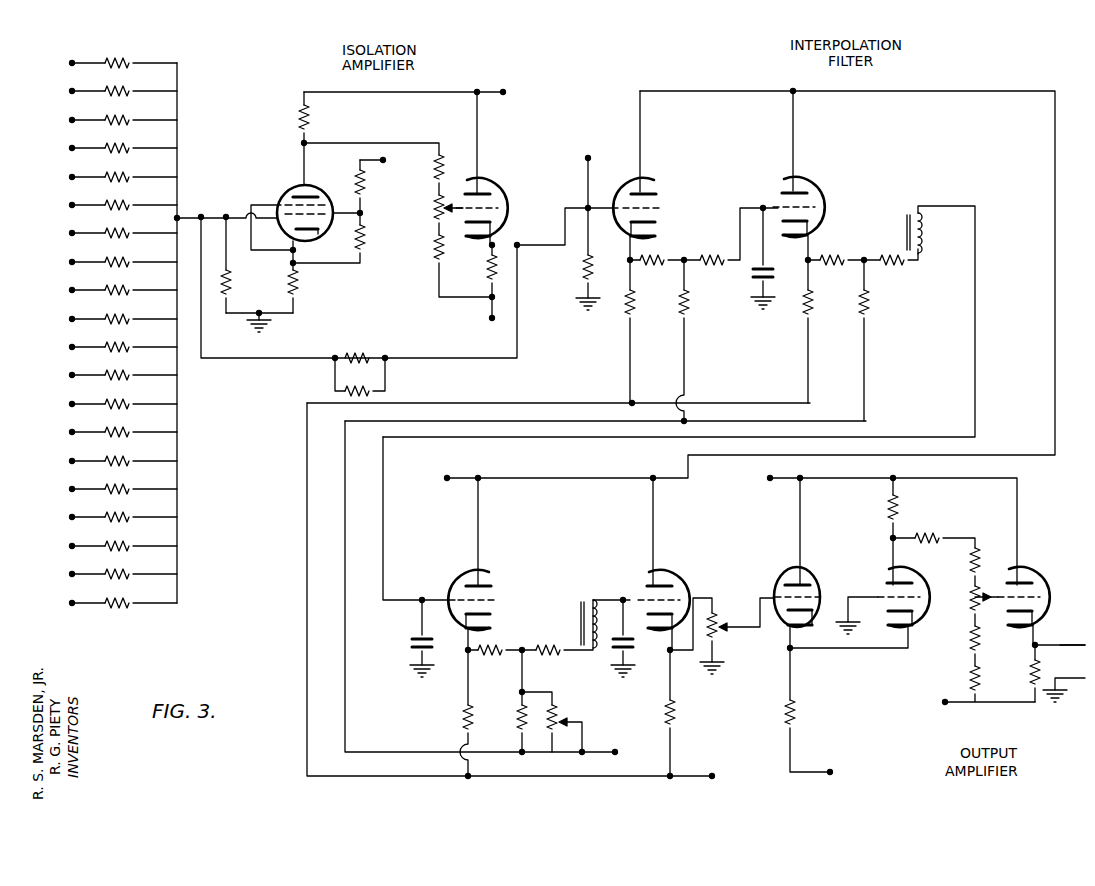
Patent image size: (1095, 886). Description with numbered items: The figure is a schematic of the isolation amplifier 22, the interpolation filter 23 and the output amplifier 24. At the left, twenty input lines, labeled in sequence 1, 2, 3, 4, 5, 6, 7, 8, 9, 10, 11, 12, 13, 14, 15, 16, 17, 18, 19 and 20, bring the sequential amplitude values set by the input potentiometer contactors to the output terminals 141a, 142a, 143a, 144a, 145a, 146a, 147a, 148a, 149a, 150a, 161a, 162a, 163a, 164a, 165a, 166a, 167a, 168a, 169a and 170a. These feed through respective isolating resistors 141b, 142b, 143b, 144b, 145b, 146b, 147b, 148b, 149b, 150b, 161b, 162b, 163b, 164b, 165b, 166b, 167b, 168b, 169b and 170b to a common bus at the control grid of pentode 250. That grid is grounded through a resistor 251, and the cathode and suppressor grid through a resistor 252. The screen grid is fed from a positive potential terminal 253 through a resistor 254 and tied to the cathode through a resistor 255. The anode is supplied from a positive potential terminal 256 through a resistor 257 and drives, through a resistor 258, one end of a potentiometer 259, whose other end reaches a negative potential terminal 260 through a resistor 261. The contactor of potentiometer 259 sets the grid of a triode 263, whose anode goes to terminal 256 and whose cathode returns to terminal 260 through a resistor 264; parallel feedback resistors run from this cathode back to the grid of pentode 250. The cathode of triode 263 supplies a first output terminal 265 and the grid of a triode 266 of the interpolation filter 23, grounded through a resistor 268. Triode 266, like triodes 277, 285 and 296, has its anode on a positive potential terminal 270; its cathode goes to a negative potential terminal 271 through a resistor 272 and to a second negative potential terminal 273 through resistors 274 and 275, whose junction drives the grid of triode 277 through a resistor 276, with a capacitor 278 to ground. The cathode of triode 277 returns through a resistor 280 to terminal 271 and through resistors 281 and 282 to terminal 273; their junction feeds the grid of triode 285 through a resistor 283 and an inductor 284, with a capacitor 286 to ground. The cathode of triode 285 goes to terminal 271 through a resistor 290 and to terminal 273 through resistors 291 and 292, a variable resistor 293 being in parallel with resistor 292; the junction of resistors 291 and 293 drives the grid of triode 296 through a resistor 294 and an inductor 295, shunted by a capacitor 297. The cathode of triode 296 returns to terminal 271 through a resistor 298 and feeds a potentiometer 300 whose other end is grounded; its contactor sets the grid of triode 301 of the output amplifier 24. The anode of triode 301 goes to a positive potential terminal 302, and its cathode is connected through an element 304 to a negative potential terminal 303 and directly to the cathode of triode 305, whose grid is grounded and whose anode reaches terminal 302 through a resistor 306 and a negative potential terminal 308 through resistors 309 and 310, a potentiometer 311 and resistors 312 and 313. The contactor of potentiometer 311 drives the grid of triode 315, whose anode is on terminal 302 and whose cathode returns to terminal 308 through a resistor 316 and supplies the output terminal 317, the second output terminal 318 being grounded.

The switch contact 1 is at (88, 56).
The switch contact 2 is at (88, 84).
The switch contact 3 is at (88, 113).
The switch contact 4 is at (88, 141).
The switch contact 5 is at (88, 170).
The switch contact 6 is at (88, 198).
The switch contact 7 is at (88, 226).
The switch contact 8 is at (88, 255).
The switch contact 9 is at (88, 283).
The switch contact 10 is at (88, 312).
The switch contact 11 is at (88, 340).
The switch contact 12 is at (88, 368).
The switch contact 13 is at (88, 397).
The switch contact 14 is at (88, 425).
The switch contact 15 is at (88, 454).
The switch contact 16 is at (88, 482).
The switch contact 17 is at (88, 510).
The switch contact 18 is at (88, 539).
The switch contact 19 is at (88, 567).
The switch contact 20 is at (88, 596).
The output terminal 141a is at (67, 65).
The output terminal 142a is at (67, 93).
The output terminal 143a is at (67, 122).
The output terminal 144a is at (67, 150).
The output terminal 145a is at (67, 179).
The output terminal 146a is at (67, 207).
The output terminal 147a is at (67, 235).
The output terminal 148a is at (67, 264).
The output terminal 149a is at (67, 292).
The output terminal 150a is at (67, 321).
The output terminal 161a is at (67, 349).
The output terminal 162a is at (67, 377).
The output terminal 163a is at (67, 406).
The output terminal 164a is at (67, 434).
The output terminal 165a is at (67, 463).
The output terminal 166a is at (67, 491).
The output terminal 167a is at (67, 519).
The output terminal 168a is at (67, 548).
The output terminal 169a is at (67, 576).
The output terminal 170a is at (67, 605).
The isolating resistor 141b is at (122, 62).
The isolating resistor 142b is at (122, 90).
The isolating resistor 143b is at (122, 119).
The isolating resistor 144b is at (122, 147).
The isolating resistor 145b is at (122, 176).
The isolating resistor 146b is at (122, 204).
The isolating resistor 147b is at (122, 227).
The isolating resistor 148b is at (122, 261).
The isolating resistor 149b is at (122, 289).
The isolating resistor 150b is at (122, 318).
The isolating resistor 161b is at (122, 346).
The isolating resistor 162b is at (122, 374).
The isolating resistor 163b is at (122, 403).
The isolating resistor 164b is at (122, 431).
The isolating resistor 165b is at (122, 460).
The isolating resistor 166b is at (122, 488).
The isolating resistor 167b is at (122, 516).
The isolating resistor 168b is at (122, 545).
The isolating resistor 169b is at (122, 573).
The isolating resistor 170b is at (122, 602).
The isolation amplifier 22 is at (264, 126).
The interpolation filter 23 is at (726, 122).
The output amplifier 24 is at (858, 504).
The pentode 250 is at (286, 190).
The resistor 251 is at (228, 290).
The resistor 252 is at (295, 290).
The positive potential terminal 253 is at (389, 159).
The resistor 254 is at (355, 174).
The resistor 255 is at (367, 249).
The positive potential terminal 256 is at (504, 92).
The resistor 257 is at (310, 123).
The resistor 258 is at (436, 175).
The potentiometer 259 is at (434, 210).
The negative potential terminal 260 is at (488, 318).
The resistor 261 is at (436, 253).
The triode 263 is at (493, 188).
The resistor 264 is at (490, 279).
The first output terminal 265 is at (588, 157).
The triode 266 is at (638, 180).
The resistor 268 is at (586, 274).
The positive potential terminal 270 is at (444, 482).
The negative potential terminal 271 is at (714, 772).
The resistor 272 is at (638, 309).
The second negative potential terminal 273 is at (618, 748).
The resistor 274 is at (651, 269).
The resistor 275 is at (690, 309).
The resistor 276 is at (713, 248).
The triode 277 is at (816, 185).
The capacitor 278 is at (752, 269).
The resistor 280 is at (821, 310).
The resistor 281 is at (830, 255).
The resistor 282 is at (872, 315).
The resistor 283 is at (896, 270).
The inductor 284 is at (924, 227).
The triode 285 is at (458, 564).
The capacitor 286 is at (411, 638).
The resistor 290 is at (458, 724).
The resistor 291 is at (502, 647).
The resistor 292 is at (519, 730).
The variable resistor 293 is at (564, 715).
The resistor 294 is at (568, 654).
The inductor 295 is at (602, 593).
The triode 296 is at (678, 562).
The capacitor 297 is at (613, 643).
The resistor 298 is at (676, 726).
The potentiometer 300 is at (719, 640).
The triode 301 is at (792, 569).
The positive potential terminal 302 is at (764, 481).
The negative potential terminal 303 is at (831, 772).
The resistor 304 is at (802, 725).
The triode 305 is at (922, 624).
The resistor 306 is at (885, 513).
The negative potential terminal 308 is at (940, 704).
The resistor 309 is at (926, 531).
The resistor 310 is at (968, 549).
The potentiometer 311 is at (970, 593).
The resistor 312 is at (968, 647).
The resistor 313 is at (967, 684).
The triode 315 is at (1036, 564).
The resistor 316 is at (1027, 683).
The output terminal 317 is at (1088, 645).
The second output terminal 318 is at (1088, 680).